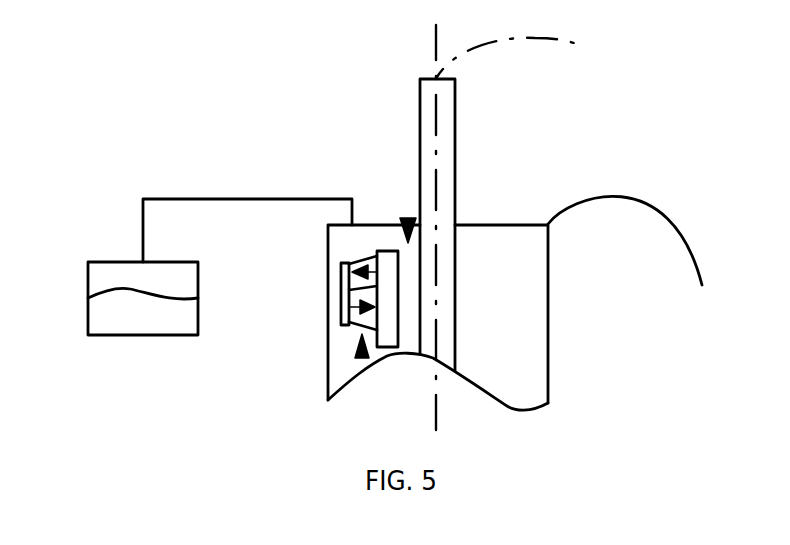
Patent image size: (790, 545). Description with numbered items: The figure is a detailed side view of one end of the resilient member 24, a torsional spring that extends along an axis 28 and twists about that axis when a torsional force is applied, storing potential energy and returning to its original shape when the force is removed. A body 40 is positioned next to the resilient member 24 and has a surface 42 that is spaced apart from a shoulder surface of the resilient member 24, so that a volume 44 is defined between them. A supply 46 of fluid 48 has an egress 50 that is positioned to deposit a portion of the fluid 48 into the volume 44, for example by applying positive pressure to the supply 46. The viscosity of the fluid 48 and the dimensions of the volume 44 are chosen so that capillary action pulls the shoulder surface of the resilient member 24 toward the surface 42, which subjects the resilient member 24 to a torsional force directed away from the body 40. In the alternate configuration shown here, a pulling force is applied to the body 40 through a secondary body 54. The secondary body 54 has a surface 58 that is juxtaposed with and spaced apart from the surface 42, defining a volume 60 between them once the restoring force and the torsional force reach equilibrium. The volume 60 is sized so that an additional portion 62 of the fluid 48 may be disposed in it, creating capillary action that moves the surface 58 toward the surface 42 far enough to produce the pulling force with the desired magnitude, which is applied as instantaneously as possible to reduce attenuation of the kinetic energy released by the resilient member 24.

The resilient member 24 is at (634, 272).
The axis 28 is at (520, 227).
The body 40 is at (386, 250).
The surface 42 is at (341, 312).
The volume 44 is at (408, 218).
The supply 46 is at (88, 280).
The fluid 48 is at (143, 298).
The egress 50 is at (352, 233).
The secondary body 54 is at (345, 263).
The surface 58 is at (377, 286).
The volume 60 is at (362, 356).
The additional portion 62 is at (341, 270).